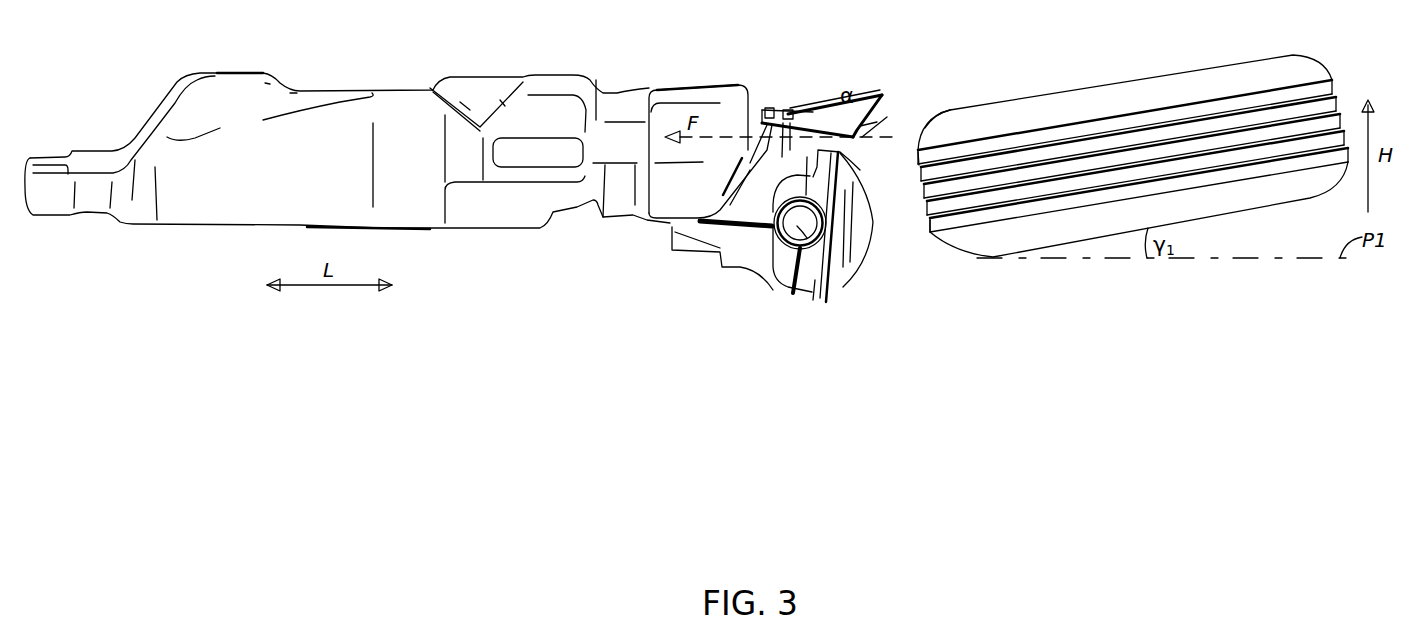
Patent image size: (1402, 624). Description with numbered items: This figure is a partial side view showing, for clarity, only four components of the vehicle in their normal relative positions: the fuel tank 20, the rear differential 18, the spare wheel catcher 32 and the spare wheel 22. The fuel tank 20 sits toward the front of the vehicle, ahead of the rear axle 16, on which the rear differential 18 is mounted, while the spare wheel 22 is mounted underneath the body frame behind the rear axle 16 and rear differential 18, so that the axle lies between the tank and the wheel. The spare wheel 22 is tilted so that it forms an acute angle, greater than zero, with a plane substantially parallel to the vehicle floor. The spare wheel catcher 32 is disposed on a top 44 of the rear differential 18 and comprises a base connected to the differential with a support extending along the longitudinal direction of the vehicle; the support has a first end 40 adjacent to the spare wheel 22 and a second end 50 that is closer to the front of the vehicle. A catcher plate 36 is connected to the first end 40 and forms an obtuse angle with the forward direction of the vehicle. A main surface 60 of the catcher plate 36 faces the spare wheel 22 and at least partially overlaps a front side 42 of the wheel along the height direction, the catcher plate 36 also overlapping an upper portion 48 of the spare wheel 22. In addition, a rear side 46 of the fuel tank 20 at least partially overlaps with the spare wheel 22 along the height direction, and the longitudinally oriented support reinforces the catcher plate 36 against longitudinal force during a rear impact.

The rear axle 16 is at (798, 295).
The rear differential 18 is at (755, 262).
The fuel tank 20 is at (393, 113).
The spare wheel 22 is at (1291, 201).
The spare wheel catcher 32 is at (823, 105).
The catcher plate 36 is at (876, 122).
The first end 40 is at (868, 120).
The front side 42 is at (917, 197).
The top 44 is at (754, 162).
The rear side 46 is at (745, 118).
The upper portion 48 is at (950, 133).
The second end 50 is at (783, 113).
The main surface 60 is at (887, 118).